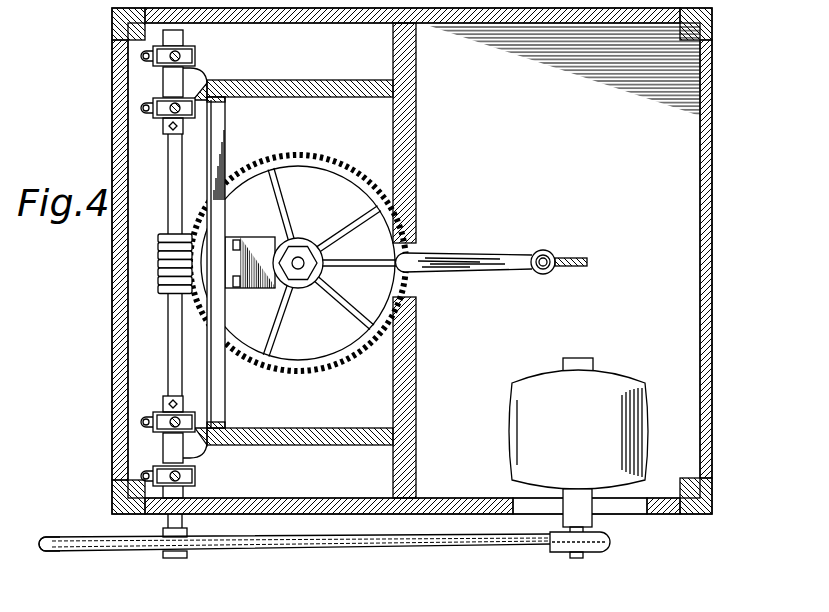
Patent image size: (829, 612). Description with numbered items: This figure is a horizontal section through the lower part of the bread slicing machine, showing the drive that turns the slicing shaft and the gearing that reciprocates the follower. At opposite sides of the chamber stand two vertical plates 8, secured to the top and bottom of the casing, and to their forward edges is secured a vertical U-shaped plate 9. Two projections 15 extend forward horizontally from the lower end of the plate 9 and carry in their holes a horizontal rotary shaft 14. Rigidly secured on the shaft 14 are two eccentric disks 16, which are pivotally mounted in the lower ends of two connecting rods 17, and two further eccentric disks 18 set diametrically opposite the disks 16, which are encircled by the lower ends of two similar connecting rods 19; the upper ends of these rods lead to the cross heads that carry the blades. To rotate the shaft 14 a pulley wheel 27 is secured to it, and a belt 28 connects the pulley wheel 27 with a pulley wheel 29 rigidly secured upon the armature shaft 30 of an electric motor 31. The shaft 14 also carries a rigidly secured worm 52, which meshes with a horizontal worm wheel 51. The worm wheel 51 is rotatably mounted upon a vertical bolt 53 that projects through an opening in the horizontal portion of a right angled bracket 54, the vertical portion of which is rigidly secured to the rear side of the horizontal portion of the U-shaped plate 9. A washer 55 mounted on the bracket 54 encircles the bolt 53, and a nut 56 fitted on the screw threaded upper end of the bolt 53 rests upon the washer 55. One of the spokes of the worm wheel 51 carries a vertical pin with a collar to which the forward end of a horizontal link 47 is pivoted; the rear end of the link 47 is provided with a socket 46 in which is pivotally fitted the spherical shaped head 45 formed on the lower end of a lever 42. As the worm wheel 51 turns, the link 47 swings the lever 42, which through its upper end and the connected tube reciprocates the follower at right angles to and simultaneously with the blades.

The vertical plates 8 is at (318, 80).
The U-shaped plate 9 is at (226, 121).
The rotary shaft 14 is at (170, 342).
The projections 15 is at (166, 82).
The eccentric disks 16 is at (195, 47).
The connecting rods 17 is at (192, 57).
The eccentric disks 18 is at (155, 114).
The connecting rods 19 is at (180, 106).
The pulley wheel 27 is at (66, 537).
The belt 28 is at (434, 537).
The pulley wheel 29 is at (553, 549).
The armature shaft 30 is at (580, 557).
The electric motor 31 is at (578, 445).
The lever 42 is at (582, 258).
The spherical shaped head 45 is at (548, 251).
The socket 46 is at (540, 273).
The horizontal link 47 is at (476, 254).
The worm wheel 51 is at (352, 158).
The worm 52 is at (160, 247).
The vertical bolt 53 is at (301, 257).
The right angled bracket 54 is at (255, 237).
The washer 55 is at (340, 252).
The nut 56 is at (305, 277).